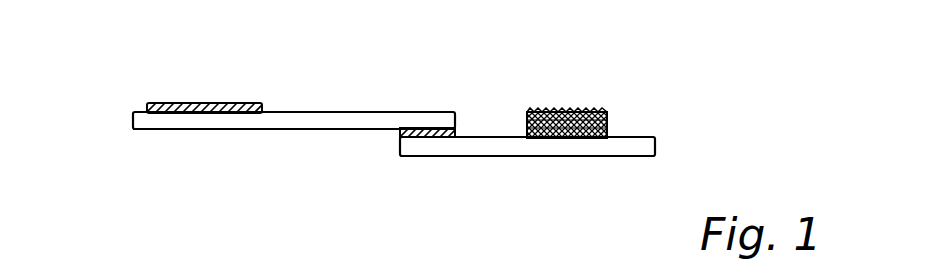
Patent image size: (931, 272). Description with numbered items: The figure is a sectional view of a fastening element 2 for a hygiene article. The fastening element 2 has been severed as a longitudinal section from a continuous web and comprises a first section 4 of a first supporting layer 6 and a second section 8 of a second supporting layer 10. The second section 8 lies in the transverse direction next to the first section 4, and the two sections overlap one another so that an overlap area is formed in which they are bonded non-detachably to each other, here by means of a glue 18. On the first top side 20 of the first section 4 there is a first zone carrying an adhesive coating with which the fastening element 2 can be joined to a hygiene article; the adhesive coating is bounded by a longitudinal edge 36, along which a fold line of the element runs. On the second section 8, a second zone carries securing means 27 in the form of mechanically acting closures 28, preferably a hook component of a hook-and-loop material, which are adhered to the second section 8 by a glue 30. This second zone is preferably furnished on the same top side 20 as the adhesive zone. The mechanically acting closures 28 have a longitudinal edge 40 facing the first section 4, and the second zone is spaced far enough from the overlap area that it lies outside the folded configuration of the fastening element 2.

The fastening element 2 is at (118, 100).
The first section 4 is at (453, 45).
The first supporting layer 6 is at (170, 129).
The second section 8 is at (659, 176).
The second supporting layer 10 is at (655, 146).
The glue 18 is at (400, 133).
The first top side 20 is at (344, 106).
The securing means 27 is at (562, 98).
The mechanically acting closures 28 is at (593, 111).
The glue 30 is at (607, 132).
The longitudinal edge of the adhesive coating 36 is at (267, 112).
The longitudinal edge of the second zone 40 is at (527, 137).